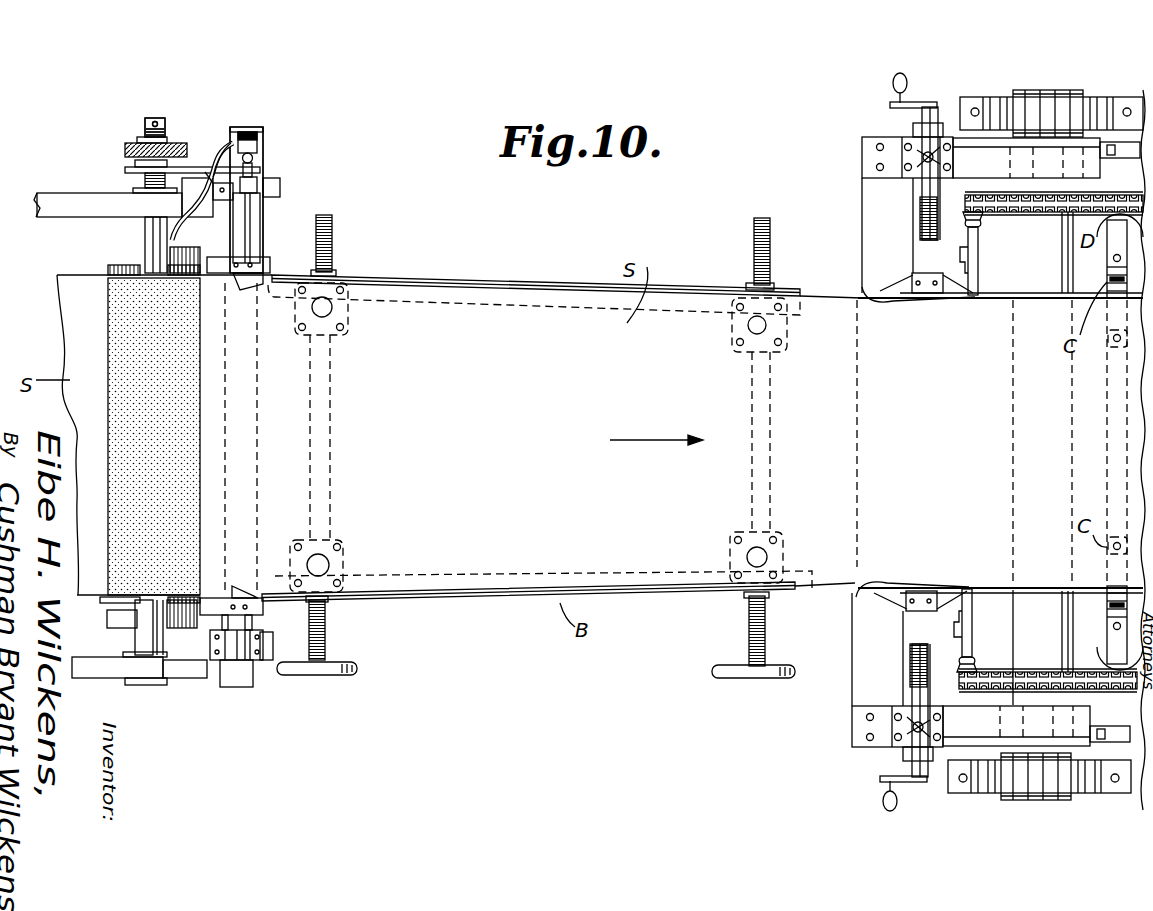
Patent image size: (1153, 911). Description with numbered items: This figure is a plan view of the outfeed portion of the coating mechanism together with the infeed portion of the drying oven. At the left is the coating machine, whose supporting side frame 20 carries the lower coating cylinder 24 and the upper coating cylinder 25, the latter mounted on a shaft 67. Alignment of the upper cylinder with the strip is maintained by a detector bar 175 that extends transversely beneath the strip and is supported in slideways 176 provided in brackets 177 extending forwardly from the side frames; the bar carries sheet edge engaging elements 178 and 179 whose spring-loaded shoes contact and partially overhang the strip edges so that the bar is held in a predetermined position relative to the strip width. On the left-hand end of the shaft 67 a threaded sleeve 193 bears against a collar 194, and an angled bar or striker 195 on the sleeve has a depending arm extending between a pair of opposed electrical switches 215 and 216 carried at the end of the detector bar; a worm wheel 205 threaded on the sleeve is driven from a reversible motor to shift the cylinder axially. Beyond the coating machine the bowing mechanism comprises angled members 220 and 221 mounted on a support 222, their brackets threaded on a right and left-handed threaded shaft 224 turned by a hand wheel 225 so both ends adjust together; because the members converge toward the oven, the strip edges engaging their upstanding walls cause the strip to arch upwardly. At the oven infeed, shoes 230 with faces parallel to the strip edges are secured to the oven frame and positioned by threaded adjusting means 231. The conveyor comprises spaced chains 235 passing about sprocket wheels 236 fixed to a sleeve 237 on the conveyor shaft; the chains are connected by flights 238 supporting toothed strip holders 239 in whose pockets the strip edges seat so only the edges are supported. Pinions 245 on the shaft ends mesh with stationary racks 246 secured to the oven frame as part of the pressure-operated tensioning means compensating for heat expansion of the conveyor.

The supporting side frame 20 is at (78, 205).
The lower coating cylinder 24 is at (108, 268).
The upper coating cylinder 25 is at (125, 290).
The shaft 67 is at (150, 238).
The detector bar 175 is at (262, 225).
The slideways 176 is at (264, 165).
The brackets 177 is at (278, 183).
The sheet edge engaging element 178 is at (252, 609).
The sheet edge engaging element 179 is at (270, 285).
The threaded sleeve 193 is at (147, 130).
The collar 194 is at (163, 116).
The angled bar or striker 195 is at (203, 170).
The worm wheel 205 is at (130, 143).
The electrical switch 215 is at (238, 225).
The electrical switch 216 is at (255, 132).
The angled member 220 is at (550, 281).
The angled member 221 is at (473, 600).
The support 222 is at (333, 405).
The right and left-handed threaded shaft 224 is at (333, 247).
The hand wheel 225 is at (333, 674).
The shoes 230 is at (858, 298).
The threaded adjusting means 231 is at (928, 105).
The conveyor chains 235 is at (993, 216).
The sprocket wheels 236 is at (1010, 196).
The sleeve 237 is at (1017, 600).
The flights 238 is at (973, 268).
The strip holders 239 is at (965, 275).
The pinions 245 is at (1032, 93).
The stationary racks 246 is at (1117, 100).